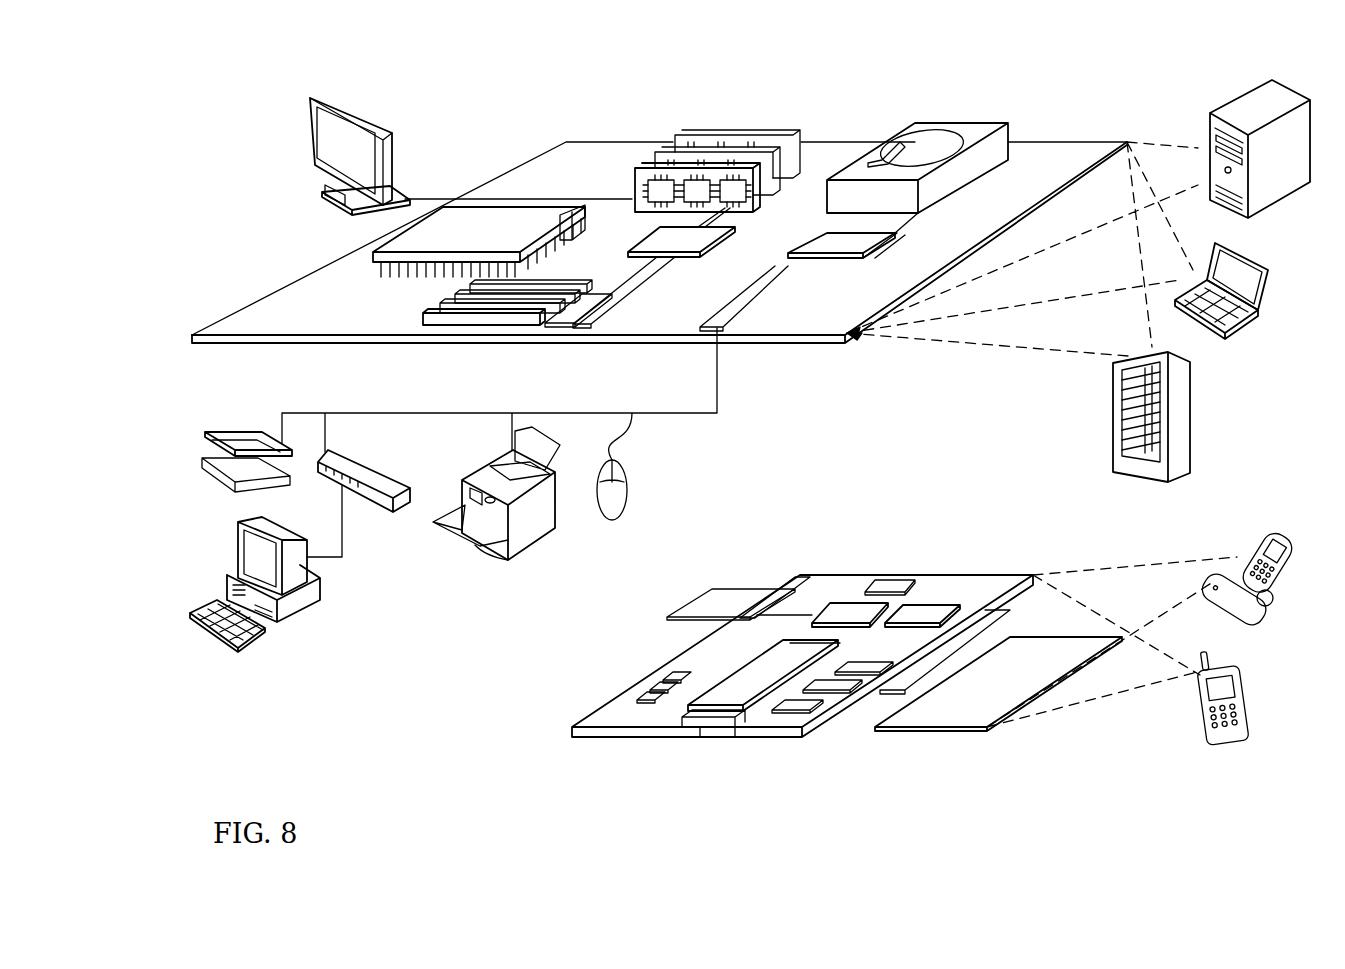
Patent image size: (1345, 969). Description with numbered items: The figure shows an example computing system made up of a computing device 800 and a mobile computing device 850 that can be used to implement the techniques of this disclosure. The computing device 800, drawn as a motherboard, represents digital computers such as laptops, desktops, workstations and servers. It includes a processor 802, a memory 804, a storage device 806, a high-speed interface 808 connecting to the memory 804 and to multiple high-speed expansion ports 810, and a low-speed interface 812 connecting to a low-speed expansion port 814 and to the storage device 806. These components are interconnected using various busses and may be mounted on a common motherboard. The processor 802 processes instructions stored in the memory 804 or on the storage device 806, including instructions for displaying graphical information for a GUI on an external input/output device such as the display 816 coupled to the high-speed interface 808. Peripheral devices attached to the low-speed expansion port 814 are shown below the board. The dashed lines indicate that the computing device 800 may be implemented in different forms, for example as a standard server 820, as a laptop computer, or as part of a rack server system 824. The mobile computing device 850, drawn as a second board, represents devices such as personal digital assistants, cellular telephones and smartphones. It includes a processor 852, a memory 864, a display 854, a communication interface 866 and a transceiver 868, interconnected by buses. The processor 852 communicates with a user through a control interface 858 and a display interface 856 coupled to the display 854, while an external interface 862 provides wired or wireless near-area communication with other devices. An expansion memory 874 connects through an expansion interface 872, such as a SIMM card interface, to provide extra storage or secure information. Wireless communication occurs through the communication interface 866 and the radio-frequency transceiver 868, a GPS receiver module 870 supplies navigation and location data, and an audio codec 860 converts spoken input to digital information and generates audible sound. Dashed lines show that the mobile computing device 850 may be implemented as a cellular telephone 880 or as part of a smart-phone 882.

The computing device 800 is at (495, 115).
The processor 802 is at (373, 254).
The memory 804 is at (690, 136).
The storage device 806 is at (910, 130).
The high-speed interface 808 is at (640, 230).
The high-speed expansion ports 810 is at (447, 310).
The low-speed interface 812 is at (823, 243).
The low-speed expansion port 814 is at (727, 336).
The display 816 is at (313, 93).
The standard server 820 is at (1206, 128).
The rack server system 824 is at (1114, 453).
The mobile computing device 850 is at (548, 740).
The processor 852 is at (738, 700).
The display 854 is at (960, 713).
The display interface 856 is at (798, 712).
The control interface 858 is at (830, 692).
The audio codec 860 is at (858, 670).
The external interface 862 is at (705, 725).
The memory 864 is at (657, 688).
The communication interface 866 is at (850, 607).
The transceiver 868 is at (923, 610).
The GPS receiver module 870 is at (900, 578).
The expansion interface 872 is at (782, 585).
The expansion memory 874 is at (712, 589).
The cellular telephone 880 is at (1255, 535).
The smart-phone 882 is at (1200, 705).